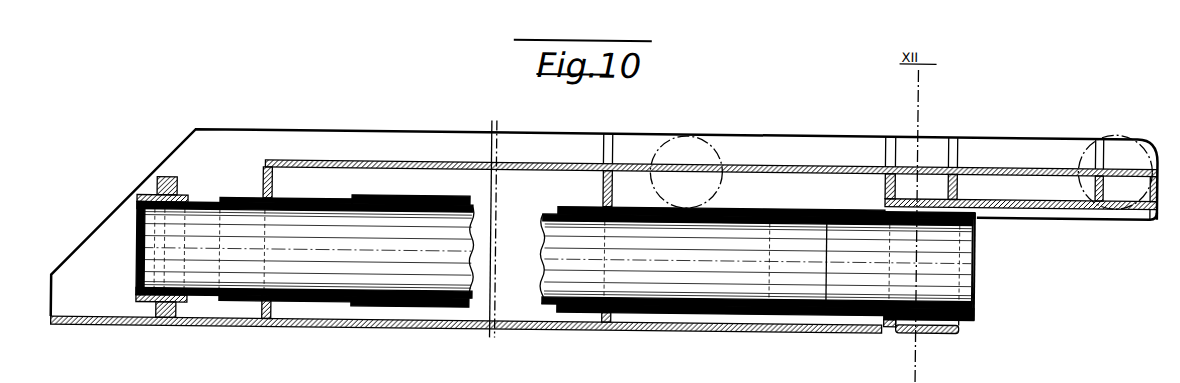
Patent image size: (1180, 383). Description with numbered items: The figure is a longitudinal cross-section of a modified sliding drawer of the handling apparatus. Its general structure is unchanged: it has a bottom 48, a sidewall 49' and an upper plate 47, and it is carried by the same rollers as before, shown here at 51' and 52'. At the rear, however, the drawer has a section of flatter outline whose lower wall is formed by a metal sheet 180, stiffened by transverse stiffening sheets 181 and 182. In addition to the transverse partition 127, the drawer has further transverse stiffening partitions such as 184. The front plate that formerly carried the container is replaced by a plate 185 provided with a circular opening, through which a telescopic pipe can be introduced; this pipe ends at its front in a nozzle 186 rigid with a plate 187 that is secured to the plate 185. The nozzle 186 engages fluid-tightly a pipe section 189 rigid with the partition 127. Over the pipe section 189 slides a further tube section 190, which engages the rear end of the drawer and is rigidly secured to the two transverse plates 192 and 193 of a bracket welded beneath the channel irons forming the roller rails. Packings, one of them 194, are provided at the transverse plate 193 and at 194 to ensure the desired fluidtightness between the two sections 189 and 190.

The upper plate 47 is at (517, 156).
The bottom 48 is at (527, 322).
The sidewall 49' is at (604, 210).
The roller 51' is at (686, 150).
The roller 52' is at (1105, 152).
The transverse partition 127 is at (282, 157).
The metal sheet 180 is at (1040, 196).
The transverse stiffening sheet 181 is at (965, 159).
The transverse stiffening sheet 182 is at (1113, 156).
The transverse stiffening partition 184 is at (615, 158).
The plate 185 is at (173, 173).
The nozzle 186 is at (150, 300).
The plate 187 is at (155, 191).
The pipe section 189 is at (328, 198).
The tube section 190 is at (737, 200).
The transverse plate 192 is at (965, 312).
The transverse plate 193 is at (893, 322).
The packing 194 is at (390, 299).